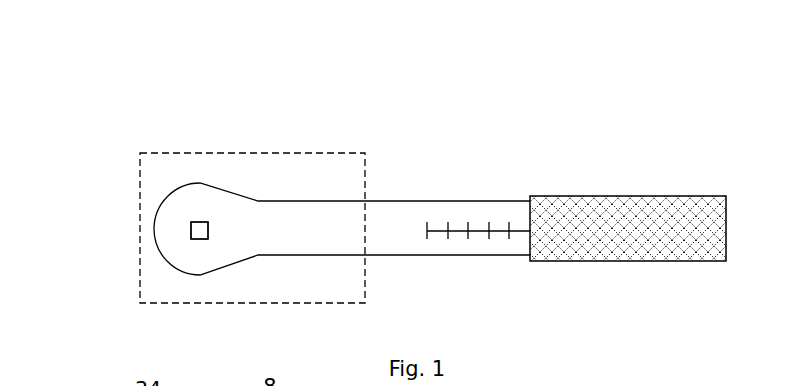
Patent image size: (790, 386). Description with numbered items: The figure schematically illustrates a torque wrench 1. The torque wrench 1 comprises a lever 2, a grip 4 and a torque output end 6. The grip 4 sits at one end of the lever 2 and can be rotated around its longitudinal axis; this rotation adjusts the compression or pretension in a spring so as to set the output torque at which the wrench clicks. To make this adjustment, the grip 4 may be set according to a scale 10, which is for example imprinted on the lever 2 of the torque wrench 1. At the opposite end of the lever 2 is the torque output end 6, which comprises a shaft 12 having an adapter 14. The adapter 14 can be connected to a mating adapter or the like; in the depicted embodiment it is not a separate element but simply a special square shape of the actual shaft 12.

The torque wrench 1 is at (383, 175).
The lever 2 is at (440, 201).
The grip 4 is at (595, 196).
The torque output end 6 is at (155, 245).
The scale 10 is at (477, 231).
The shaft 12 is at (207, 222).
The adapter 14 is at (199, 230).